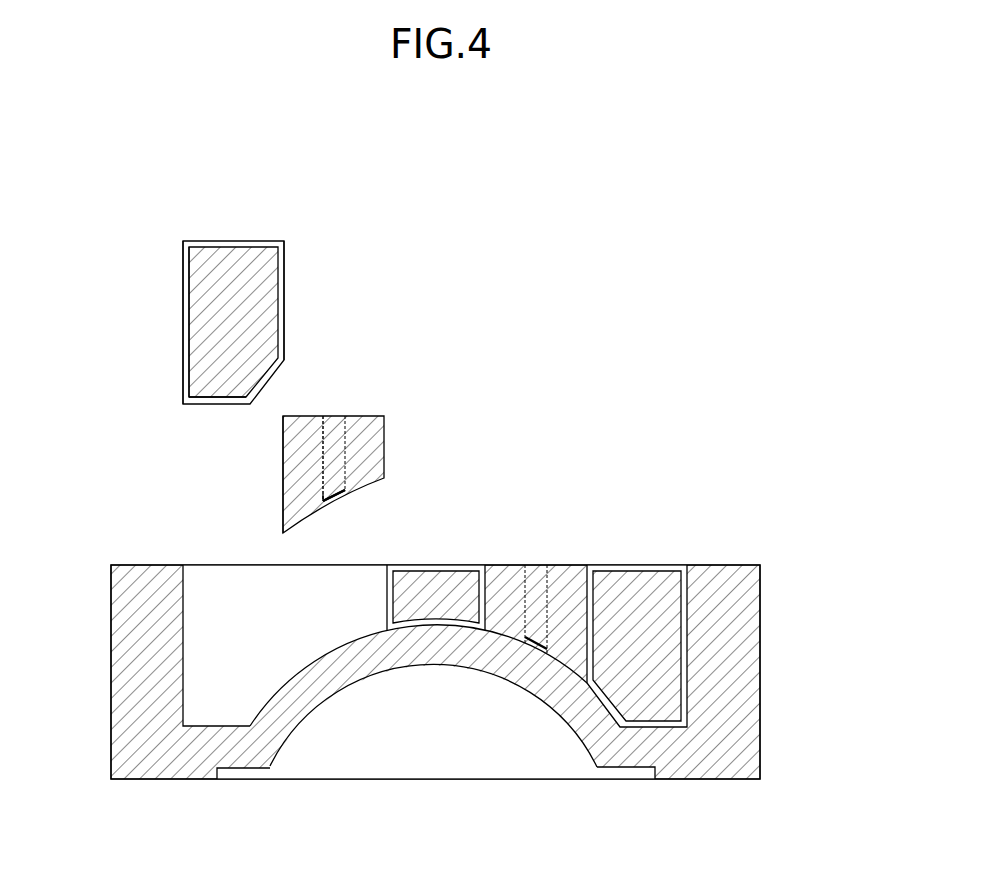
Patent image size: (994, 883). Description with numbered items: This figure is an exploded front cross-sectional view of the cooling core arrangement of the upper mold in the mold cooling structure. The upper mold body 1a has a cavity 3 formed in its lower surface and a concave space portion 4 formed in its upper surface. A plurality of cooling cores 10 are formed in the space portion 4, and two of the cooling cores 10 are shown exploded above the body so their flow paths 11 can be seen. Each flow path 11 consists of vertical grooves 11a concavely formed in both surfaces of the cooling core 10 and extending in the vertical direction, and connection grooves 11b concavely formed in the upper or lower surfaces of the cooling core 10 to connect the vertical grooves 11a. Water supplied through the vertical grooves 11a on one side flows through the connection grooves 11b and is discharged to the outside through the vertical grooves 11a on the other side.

The upper mold body 1a is at (712, 779).
The cavity 3 is at (537, 700).
The space portion 4 is at (322, 652).
The cooling core 10 is at (236, 240).
The flow path 11 is at (181, 305).
The vertical groove 11a is at (284, 290).
The connection groove 11b is at (216, 397).